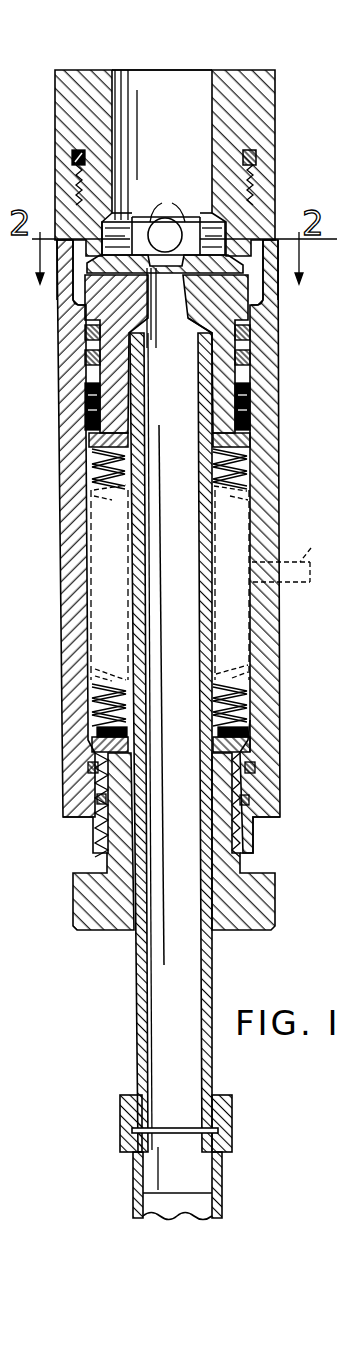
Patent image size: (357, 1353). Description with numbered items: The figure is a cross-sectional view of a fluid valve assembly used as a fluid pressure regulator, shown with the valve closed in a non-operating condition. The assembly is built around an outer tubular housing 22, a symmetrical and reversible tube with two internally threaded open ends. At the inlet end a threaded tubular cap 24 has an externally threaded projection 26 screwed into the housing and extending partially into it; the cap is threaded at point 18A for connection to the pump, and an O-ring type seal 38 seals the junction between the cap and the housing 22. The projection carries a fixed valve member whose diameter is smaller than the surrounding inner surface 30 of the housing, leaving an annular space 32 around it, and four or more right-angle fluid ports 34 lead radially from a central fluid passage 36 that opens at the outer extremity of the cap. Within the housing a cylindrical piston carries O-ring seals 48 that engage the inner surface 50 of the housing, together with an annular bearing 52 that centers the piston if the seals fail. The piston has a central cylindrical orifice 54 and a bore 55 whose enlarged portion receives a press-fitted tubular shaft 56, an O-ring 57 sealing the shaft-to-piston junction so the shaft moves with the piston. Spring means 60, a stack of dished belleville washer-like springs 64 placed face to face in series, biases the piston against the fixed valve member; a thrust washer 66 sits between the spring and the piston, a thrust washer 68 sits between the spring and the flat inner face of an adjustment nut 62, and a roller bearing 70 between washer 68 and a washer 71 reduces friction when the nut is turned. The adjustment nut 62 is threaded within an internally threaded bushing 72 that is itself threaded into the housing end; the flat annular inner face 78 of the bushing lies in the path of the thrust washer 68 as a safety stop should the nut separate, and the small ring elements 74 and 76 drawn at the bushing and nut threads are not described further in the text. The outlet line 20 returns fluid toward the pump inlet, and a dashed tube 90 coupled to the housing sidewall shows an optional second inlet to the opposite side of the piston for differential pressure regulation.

The threaded point 18A is at (212, 76).
The line 20 is at (220, 1171).
The outer tubular housing 22 is at (281, 448).
The threaded tubular cap 24 is at (277, 111).
The externally threaded projection 26 is at (113, 181).
The inner surface of housing 30 is at (258, 278).
The annular space 32 is at (57, 284).
The right-angle fluid ports 34 is at (165, 234).
The central fluid passage 36 is at (193, 150).
The O-ring type seal 38 is at (72, 157).
The O-ring seals 48 is at (250, 337).
The inner surface of housing 50 is at (247, 535).
The annular bearing 52 is at (250, 408).
The central cylindrical orifice 54 is at (155, 298).
The bore 55 is at (209, 383).
The tubular shaft 56 is at (158, 556).
The O-ring 57 is at (213, 331).
The spring means 60 is at (96, 488).
The adjustment nut 62 is at (259, 835).
The washer-like springs 64 is at (97, 724).
The thrust washer 66 is at (93, 443).
The thrust washer 68 is at (278, 736).
The roller bearing 70 is at (97, 733).
The washer 71 is at (257, 727).
The internally threaded bushing 72 is at (258, 787).
The seal ring 74 is at (100, 798).
The seal ring 76 is at (90, 770).
The flat annular inner face 78 is at (257, 753).
The tube 90 is at (298, 560).